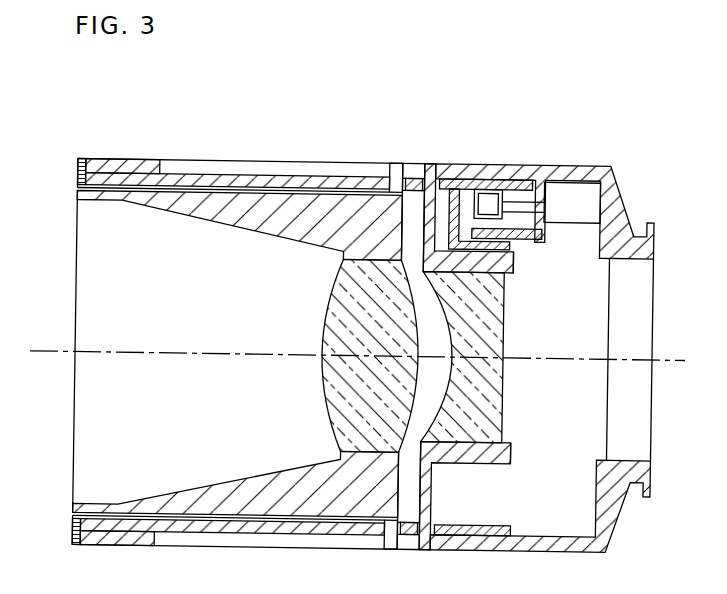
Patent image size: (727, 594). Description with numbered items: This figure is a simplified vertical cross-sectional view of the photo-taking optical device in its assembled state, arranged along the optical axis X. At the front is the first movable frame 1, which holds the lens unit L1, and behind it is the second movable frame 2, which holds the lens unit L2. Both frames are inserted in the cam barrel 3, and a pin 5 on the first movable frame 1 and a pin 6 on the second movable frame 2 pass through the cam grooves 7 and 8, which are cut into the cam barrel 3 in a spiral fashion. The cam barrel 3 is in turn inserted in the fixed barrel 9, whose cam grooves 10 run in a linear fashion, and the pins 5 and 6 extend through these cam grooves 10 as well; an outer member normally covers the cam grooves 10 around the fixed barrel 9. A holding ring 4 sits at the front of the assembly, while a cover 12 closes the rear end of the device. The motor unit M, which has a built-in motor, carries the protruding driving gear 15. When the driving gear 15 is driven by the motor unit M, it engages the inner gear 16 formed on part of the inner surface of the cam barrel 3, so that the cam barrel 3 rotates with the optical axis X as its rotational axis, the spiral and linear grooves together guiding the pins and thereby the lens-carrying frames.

The first movable frame 1 is at (238, 214).
The second movable frame 2 is at (512, 262).
The cam barrel 3 is at (263, 177).
The holding ring 4 is at (80, 163).
The pin 5 is at (405, 176).
The pin 6 is at (430, 181).
The cam groove 7 is at (383, 186).
The cam groove 8 is at (413, 183).
The fixed barrel 9 is at (588, 170).
The cam grooves 10 is at (300, 163).
The cover 12 is at (620, 185).
The driving gear 15 is at (498, 203).
The inner gear 16 is at (492, 182).
The motor unit M is at (572, 206).
The lens unit L1 is at (325, 346).
The lens unit L2 is at (504, 345).
The optical axis X is at (50, 356).